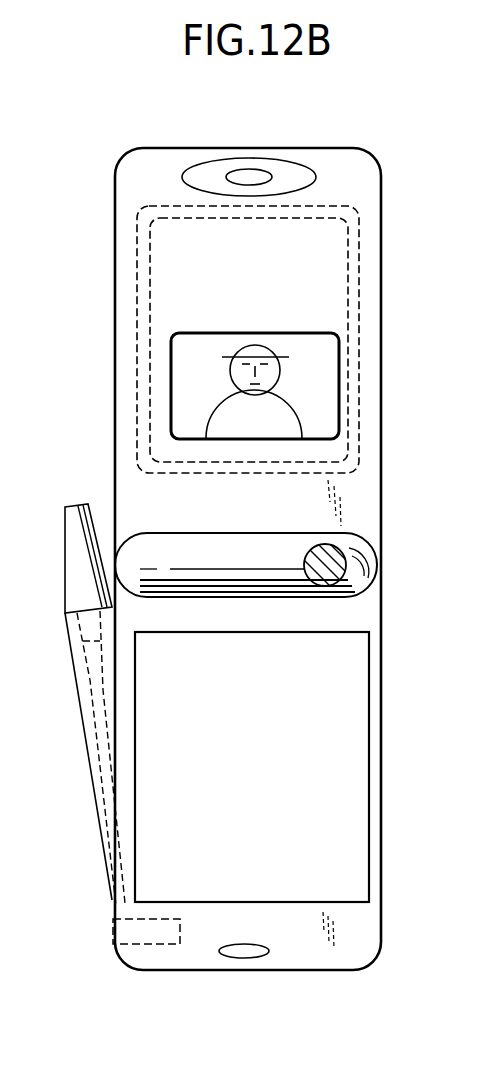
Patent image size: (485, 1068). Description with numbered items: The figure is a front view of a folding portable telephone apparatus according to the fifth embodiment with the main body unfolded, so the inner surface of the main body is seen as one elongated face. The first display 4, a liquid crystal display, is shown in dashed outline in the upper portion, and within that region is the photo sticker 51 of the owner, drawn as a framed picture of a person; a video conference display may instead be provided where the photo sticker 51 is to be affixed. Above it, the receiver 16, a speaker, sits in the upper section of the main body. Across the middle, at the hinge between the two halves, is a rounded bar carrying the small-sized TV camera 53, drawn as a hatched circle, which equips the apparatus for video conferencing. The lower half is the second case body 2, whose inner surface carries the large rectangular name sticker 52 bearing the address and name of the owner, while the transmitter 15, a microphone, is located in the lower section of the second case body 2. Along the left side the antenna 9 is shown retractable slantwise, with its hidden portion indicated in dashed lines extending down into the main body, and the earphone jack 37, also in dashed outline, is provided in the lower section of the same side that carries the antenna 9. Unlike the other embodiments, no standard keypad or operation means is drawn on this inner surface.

The second case body 2 is at (365, 927).
The first display 4 is at (320, 275).
The antenna 9 is at (82, 568).
The transmitter (microphone) 15 is at (246, 955).
The receiver (speaker) 16 is at (251, 178).
The earphone jack 37 is at (141, 945).
The photo sticker 51 is at (322, 396).
The name sticker 52 is at (345, 782).
The small-sized TV camera 53 is at (342, 550).